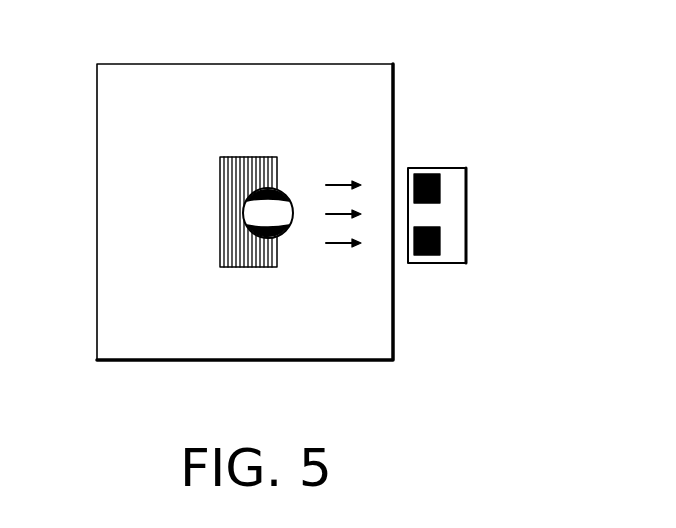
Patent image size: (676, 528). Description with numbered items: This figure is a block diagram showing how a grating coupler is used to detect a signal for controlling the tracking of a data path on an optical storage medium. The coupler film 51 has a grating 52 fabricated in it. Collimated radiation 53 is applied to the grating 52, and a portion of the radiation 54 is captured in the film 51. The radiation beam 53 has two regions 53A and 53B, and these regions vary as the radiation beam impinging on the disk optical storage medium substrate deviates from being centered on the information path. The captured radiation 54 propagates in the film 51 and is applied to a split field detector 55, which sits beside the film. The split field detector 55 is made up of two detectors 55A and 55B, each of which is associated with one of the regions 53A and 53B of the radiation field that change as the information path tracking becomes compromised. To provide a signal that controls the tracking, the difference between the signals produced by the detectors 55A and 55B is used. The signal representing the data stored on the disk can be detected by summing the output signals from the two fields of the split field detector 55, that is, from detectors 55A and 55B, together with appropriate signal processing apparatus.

The coupler film 51 is at (138, 82).
The grating 52 is at (242, 147).
The collimated radiation 53 is at (257, 220).
The region of radiation beam 53A is at (244, 209).
The region of radiation beam 53B is at (283, 250).
The captured radiation 54 is at (340, 252).
The split field detector 55 is at (488, 173).
The detector 55A is at (440, 187).
The detector 55B is at (440, 241).